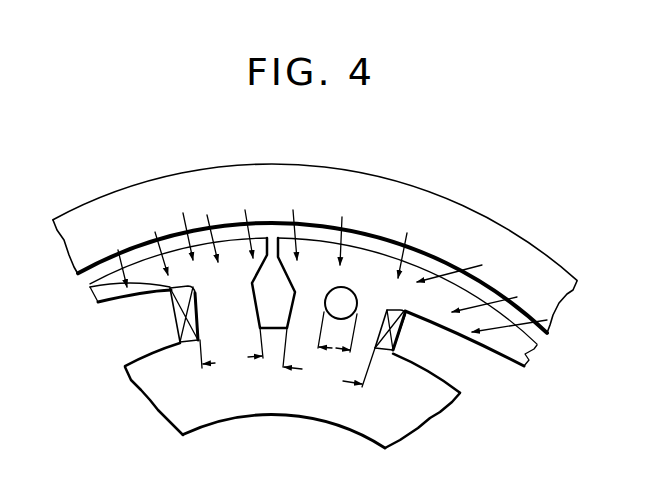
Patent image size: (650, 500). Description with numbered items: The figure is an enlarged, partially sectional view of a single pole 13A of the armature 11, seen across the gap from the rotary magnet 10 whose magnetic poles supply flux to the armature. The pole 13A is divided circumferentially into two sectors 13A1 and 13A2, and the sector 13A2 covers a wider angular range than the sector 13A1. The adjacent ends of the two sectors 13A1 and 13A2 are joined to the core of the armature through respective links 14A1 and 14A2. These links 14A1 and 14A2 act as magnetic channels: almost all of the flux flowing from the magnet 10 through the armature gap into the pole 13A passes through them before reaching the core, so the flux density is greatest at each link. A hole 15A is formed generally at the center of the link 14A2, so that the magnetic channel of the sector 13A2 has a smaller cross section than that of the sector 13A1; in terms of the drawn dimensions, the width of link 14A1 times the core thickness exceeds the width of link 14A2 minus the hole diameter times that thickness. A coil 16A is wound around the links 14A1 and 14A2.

The magnet 10 is at (458, 208).
The armature 11 is at (280, 417).
The pole 13A is at (298, 236).
The sector 13A1 is at (262, 237).
The sector 13A2 is at (440, 266).
The link 14A1 is at (208, 316).
The link 14A2 is at (393, 347).
The hole 15A is at (339, 293).
The coil 16A is at (183, 295).